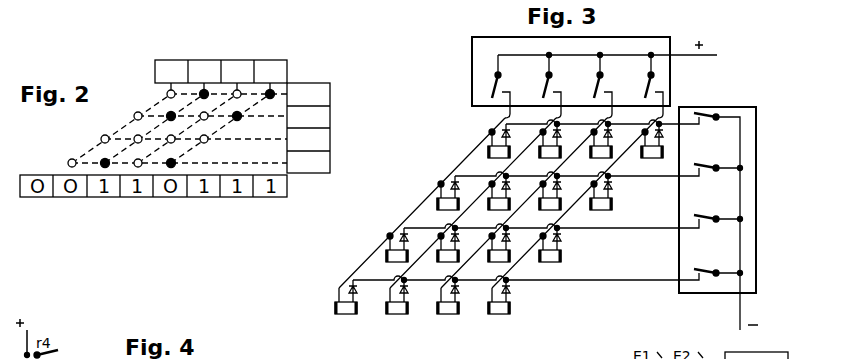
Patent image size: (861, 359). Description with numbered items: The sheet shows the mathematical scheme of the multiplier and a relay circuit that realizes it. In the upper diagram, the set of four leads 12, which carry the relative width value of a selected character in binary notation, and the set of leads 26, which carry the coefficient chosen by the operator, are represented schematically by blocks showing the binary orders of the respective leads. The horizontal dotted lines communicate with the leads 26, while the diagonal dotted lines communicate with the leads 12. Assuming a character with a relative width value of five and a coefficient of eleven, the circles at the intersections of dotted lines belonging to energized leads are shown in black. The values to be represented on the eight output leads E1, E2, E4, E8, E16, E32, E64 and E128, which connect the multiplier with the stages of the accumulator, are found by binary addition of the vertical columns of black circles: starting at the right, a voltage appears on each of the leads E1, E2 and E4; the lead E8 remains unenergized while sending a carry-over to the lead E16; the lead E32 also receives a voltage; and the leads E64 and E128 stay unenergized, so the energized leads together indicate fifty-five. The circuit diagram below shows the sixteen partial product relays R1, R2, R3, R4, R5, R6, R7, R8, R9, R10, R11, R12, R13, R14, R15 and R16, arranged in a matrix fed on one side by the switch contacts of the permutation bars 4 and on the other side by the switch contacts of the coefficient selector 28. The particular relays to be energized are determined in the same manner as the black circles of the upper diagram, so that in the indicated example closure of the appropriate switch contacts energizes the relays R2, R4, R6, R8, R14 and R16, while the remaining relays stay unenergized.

In FIG. 2, the set of four leads 12 is at (225, 48).
In FIG. 2, the set of leads 26 is at (333, 142).
In FIG. 3, the permutation bars 4 is at (633, 37).
In FIG. 3, the coefficient selector 28 is at (737, 106).
In FIG. 3, the relay R1 is at (502, 158).
In FIG. 3, the relay R2 is at (553, 158).
In FIG. 3, the relay R3 is at (604, 158).
In FIG. 3, the relay R4 is at (655, 158).
In FIG. 3, the relay R5 is at (451, 210).
In FIG. 3, the relay R6 is at (502, 210).
In FIG. 3, the relay R7 is at (553, 210).
In FIG. 3, the relay R8 is at (604, 210).
In FIG. 3, the relay R9 is at (400, 262).
In FIG. 3, the relay R10 is at (451, 262).
In FIG. 3, the relay R11 is at (502, 262).
In FIG. 3, the relay R12 is at (553, 262).
In FIG. 3, the relay R13 is at (350, 314).
In FIG. 3, the relay R14 is at (401, 314).
In FIG. 3, the relay R15 is at (452, 314).
In FIG. 3, the relay R16 is at (503, 314).
In FIG. 2, the lead E128 is at (47, 197).
In FIG. 2, the lead E64 is at (81, 197).
In FIG. 2, the lead E32 is at (115, 197).
In FIG. 2, the lead E16 is at (148, 197).
In FIG. 2, the lead E8 is at (181, 197).
In FIG. 2, the lead E4 is at (214, 197).
In FIG. 2, the lead E2 is at (247, 197).
In FIG. 2, the lead E1 is at (280, 197).